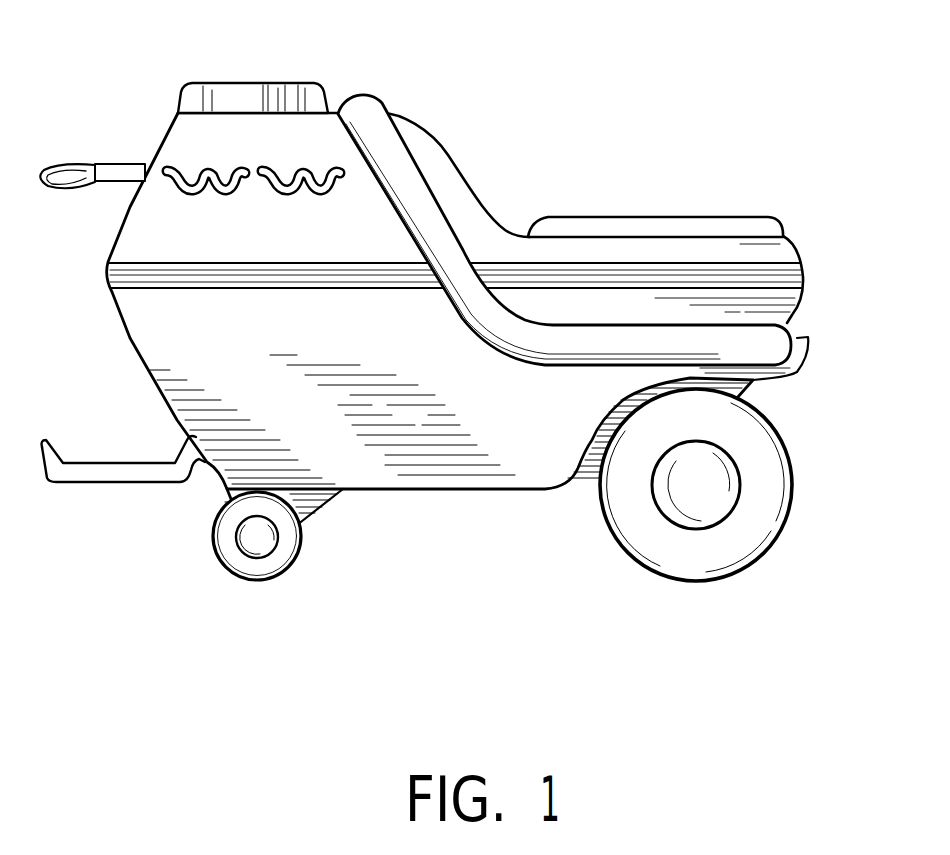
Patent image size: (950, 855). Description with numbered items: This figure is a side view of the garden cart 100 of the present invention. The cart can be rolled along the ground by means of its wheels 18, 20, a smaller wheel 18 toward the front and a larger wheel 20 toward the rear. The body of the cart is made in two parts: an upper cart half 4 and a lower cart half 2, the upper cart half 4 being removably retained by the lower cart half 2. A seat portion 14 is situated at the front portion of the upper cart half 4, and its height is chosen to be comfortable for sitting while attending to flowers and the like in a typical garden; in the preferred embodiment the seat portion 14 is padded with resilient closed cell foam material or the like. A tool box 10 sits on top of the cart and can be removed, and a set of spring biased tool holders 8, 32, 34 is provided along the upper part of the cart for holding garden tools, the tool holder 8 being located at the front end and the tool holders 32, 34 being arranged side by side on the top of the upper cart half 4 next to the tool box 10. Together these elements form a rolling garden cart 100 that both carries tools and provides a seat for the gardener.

The garden cart 100 is at (464, 307).
The lower cart half 2 is at (128, 340).
The upper cart half 4 is at (147, 148).
The spring biased tool holder 8 is at (90, 170).
The tool box 10 is at (290, 80).
The seat portion 14 is at (686, 217).
The wheel 18 is at (282, 562).
The wheel 20 is at (657, 560).
The spring biased tool holder 32 is at (193, 173).
The spring biased tool holder 34 is at (285, 170).